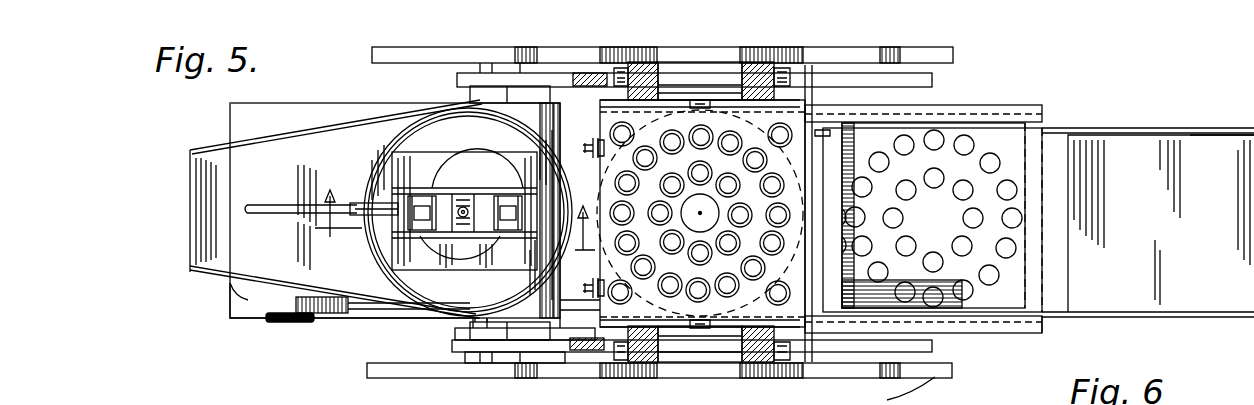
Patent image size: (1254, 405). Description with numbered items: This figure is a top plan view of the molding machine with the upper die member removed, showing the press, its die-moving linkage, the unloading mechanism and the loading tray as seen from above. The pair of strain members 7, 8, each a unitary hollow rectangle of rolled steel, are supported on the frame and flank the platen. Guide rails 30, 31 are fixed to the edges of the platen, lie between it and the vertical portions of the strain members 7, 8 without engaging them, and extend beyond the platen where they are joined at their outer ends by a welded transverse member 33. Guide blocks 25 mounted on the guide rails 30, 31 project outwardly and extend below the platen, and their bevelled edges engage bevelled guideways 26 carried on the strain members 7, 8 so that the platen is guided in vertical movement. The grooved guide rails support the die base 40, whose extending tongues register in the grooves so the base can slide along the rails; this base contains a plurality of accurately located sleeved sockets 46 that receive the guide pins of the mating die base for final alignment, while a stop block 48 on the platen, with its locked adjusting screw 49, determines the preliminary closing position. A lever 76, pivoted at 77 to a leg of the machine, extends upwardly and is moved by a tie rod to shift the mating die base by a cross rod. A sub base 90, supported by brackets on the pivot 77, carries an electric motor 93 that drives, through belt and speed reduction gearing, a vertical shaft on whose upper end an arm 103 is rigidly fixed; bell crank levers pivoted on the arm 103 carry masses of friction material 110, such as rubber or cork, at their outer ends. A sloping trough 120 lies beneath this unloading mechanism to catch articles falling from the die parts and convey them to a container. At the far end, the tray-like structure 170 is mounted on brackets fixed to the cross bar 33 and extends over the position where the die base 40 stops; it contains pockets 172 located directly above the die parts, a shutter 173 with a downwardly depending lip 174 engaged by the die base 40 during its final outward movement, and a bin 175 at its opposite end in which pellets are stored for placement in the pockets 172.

The strain member 7 is at (647, 73).
The strain member 8 is at (755, 345).
The guide block 25 is at (615, 90).
The guideway 26 is at (620, 77).
The guide rail 30 is at (1005, 334).
The guide rail 31 is at (990, 107).
The transverse member 33 is at (1043, 320).
The die base 40 is at (600, 305).
The sleeved socket 46 is at (790, 140).
The stop block 48 is at (595, 140).
The adjusting screw 49 is at (590, 152).
The lever 76 is at (562, 335).
The pivot 77 is at (478, 332).
The sub base 90 is at (228, 298).
The electric motor 93 is at (268, 302).
The arm 103 is at (418, 236).
The friction material 110 is at (440, 196).
The sloping trough 120 is at (215, 152).
The tray-like structure 170 is at (1134, 281).
The pocket 172 is at (906, 190).
The shutter 173 is at (828, 281).
The lip 174 is at (1040, 135).
The bin 175 is at (1212, 140).